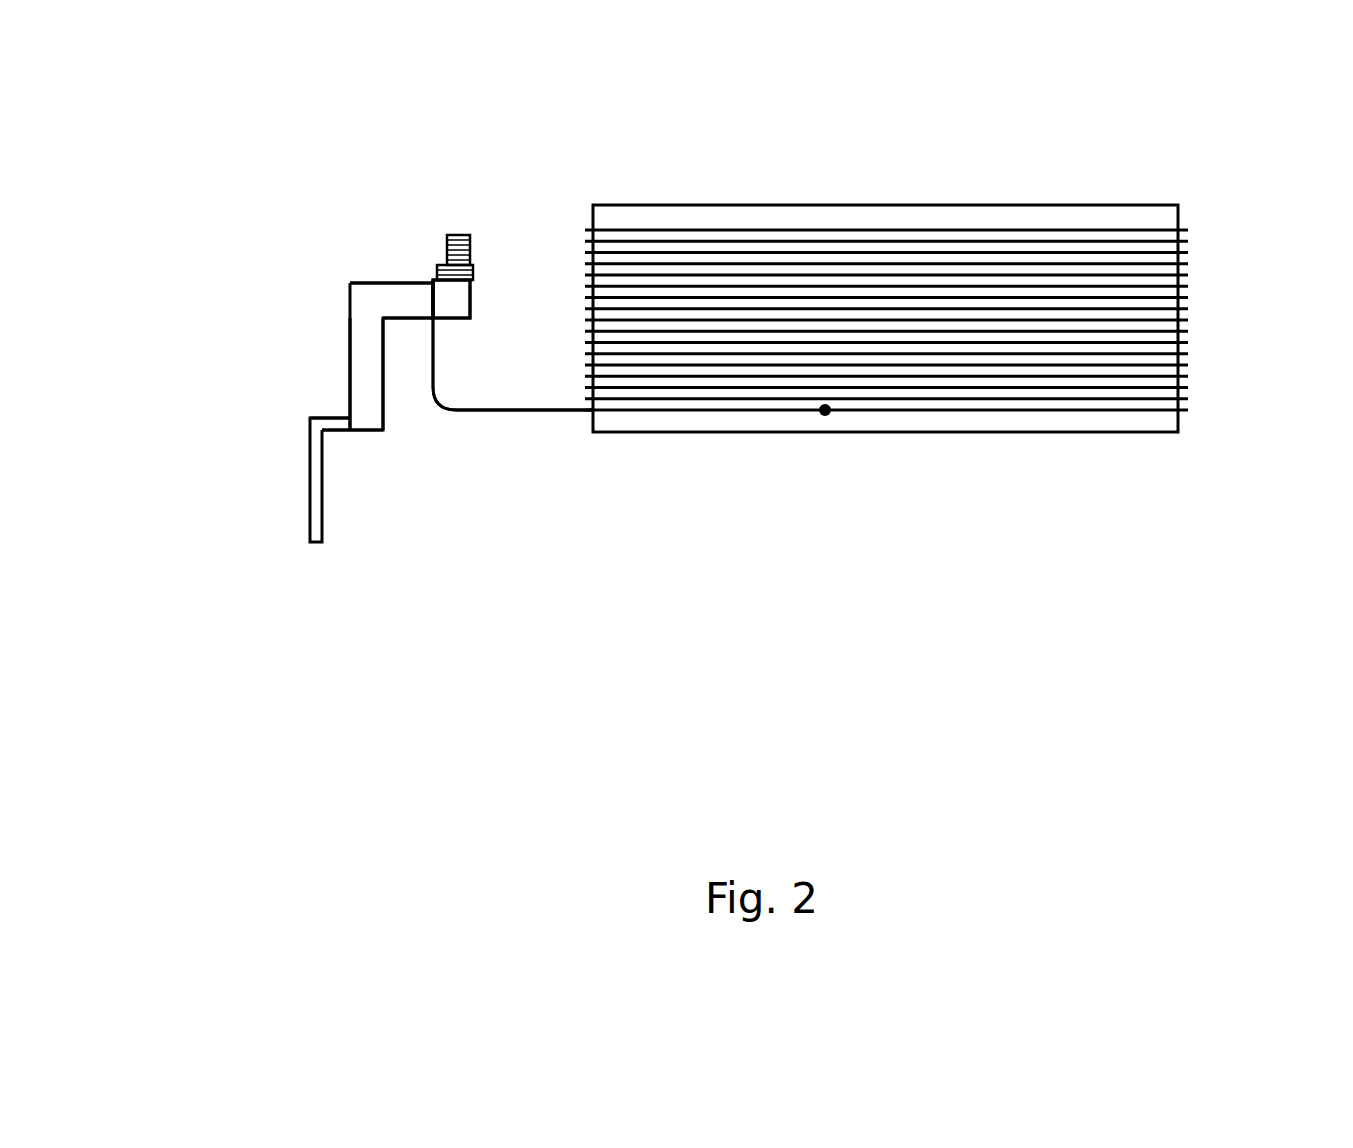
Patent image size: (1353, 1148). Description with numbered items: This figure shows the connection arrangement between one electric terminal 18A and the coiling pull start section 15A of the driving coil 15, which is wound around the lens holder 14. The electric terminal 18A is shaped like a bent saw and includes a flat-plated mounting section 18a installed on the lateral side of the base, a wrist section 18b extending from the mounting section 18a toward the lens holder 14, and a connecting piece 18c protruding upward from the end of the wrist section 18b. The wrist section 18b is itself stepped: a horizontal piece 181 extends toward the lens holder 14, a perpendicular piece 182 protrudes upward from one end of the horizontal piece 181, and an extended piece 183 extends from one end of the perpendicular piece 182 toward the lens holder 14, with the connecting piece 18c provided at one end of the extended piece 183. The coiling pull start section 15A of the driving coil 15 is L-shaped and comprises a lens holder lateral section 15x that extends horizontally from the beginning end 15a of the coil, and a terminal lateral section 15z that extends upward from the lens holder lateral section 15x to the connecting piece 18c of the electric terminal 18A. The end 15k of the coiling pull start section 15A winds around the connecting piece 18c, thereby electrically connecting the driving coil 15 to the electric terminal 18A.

The lens holder 14 is at (1017, 218).
The driving coil 15 is at (1125, 297).
The beginning end 15a is at (825, 410).
The end of the coiling pull start section 15k is at (480, 233).
The lens holder lateral section 15x is at (540, 410).
The terminal lateral section 15z is at (432, 357).
The coiling pull start section 15A is at (507, 411).
The electric terminal 18A is at (178, 140).
The mounting section 18a is at (308, 461).
The wrist section 18b is at (218, 207).
The connecting piece 18c is at (453, 232).
The horizontal piece 181 is at (323, 423).
The perpendicular piece 182 is at (363, 360).
The extended piece 183 is at (390, 293).